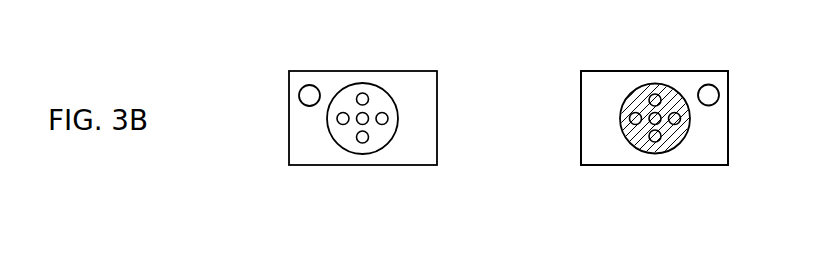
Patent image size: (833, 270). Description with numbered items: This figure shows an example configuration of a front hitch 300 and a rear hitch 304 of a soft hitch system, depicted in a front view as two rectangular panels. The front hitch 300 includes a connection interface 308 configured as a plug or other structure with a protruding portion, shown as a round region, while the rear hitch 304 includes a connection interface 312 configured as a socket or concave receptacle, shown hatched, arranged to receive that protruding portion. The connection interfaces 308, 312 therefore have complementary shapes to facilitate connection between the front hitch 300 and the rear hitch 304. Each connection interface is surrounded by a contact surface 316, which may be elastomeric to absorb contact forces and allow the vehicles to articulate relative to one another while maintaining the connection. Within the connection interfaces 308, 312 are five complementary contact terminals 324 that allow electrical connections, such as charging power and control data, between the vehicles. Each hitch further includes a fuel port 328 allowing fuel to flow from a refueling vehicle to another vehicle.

The front hitch 300 is at (477, 98).
The rear hitch 304 is at (615, 42).
The connection interface 308 is at (387, 143).
The connection interface 312 is at (678, 143).
The contact surface 316 is at (307, 148).
The contact terminal 324 is at (376, 108).
The fuel port 328 is at (299, 96).